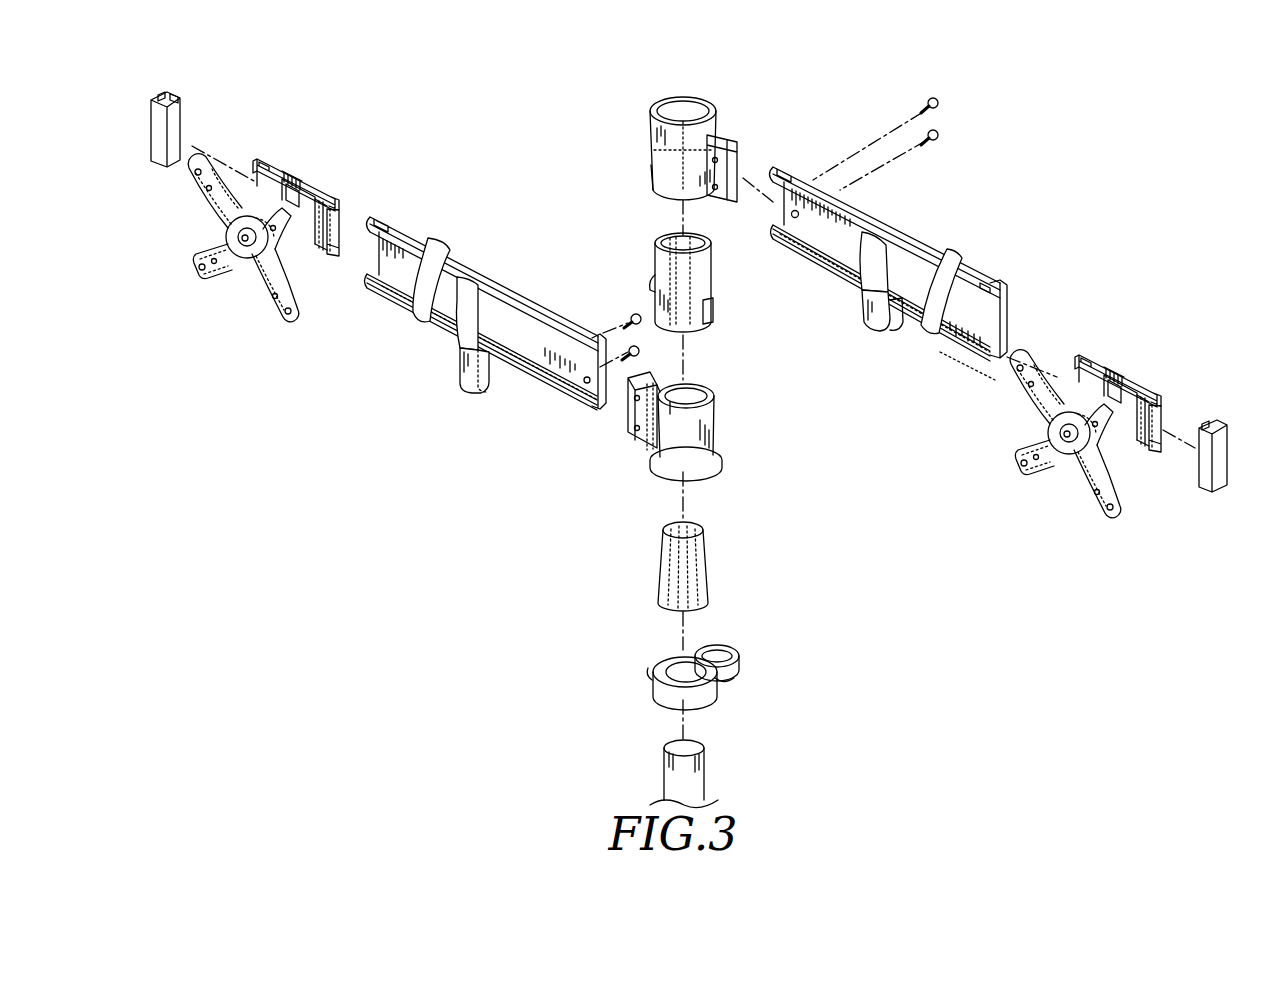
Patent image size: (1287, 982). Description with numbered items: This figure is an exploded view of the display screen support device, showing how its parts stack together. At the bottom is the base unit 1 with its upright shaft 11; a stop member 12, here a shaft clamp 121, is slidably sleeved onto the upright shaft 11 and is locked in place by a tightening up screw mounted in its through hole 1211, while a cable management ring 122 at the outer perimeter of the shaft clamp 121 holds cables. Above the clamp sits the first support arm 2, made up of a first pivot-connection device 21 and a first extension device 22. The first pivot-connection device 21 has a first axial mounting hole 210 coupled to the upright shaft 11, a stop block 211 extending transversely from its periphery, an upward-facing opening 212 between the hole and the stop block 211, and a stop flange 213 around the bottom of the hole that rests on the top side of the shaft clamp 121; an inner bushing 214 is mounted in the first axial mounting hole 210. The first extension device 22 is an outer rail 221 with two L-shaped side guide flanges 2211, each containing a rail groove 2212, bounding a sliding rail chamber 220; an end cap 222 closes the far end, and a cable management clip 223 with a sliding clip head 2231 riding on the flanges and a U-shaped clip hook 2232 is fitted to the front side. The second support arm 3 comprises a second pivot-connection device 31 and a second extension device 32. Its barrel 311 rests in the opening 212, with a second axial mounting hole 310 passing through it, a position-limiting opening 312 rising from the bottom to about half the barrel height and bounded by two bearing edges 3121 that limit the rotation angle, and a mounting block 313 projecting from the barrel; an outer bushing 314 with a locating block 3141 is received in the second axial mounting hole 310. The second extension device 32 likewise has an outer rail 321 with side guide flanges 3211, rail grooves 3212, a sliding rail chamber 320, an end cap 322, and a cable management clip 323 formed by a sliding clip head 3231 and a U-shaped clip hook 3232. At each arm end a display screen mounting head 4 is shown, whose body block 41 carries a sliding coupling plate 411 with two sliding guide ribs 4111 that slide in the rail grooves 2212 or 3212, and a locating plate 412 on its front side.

The base unit 1 is at (770, 768).
The upright shaft 11 is at (693, 783).
The stop member 12 is at (642, 670).
The shaft clamp 121 is at (680, 688).
The through hole 1211 is at (717, 680).
The cable management ring 122 is at (713, 643).
The first support arm 2 is at (488, 205).
The first pivot-connection device 21 is at (697, 440).
The first axial mounting hole 210 is at (690, 402).
The stop block 211 is at (640, 413).
The opening 212 is at (647, 436).
The stop flange 213 is at (662, 474).
The inner bushing 214 is at (670, 567).
The first extension device 22 is at (476, 278).
The sliding rail chamber 220 is at (402, 270).
The outer rail 221 is at (518, 333).
The side guide flange 2211 is at (395, 298).
The rail groove 2212 is at (405, 300).
The end cap 222 is at (165, 128).
The cable management clip 223 is at (470, 372).
The sliding clip head 2231 is at (470, 325).
The U-shaped clip hook 2232 is at (500, 370).
The second support arm 3 is at (937, 162).
The second pivot-connection device 31 is at (658, 193).
The second axial mounting hole 310 is at (690, 118).
The barrel 311 is at (673, 155).
The position-limiting opening 312 is at (650, 152).
The bearing edge 3121 is at (653, 168).
The mounting block 313 is at (720, 162).
The outer bushing 314 is at (703, 288).
The locating block 3141 is at (713, 308).
The second extension device 32 is at (873, 220).
The sliding rail chamber 320 is at (982, 312).
The outer rail 321 is at (910, 267).
The side guide flange 3211 is at (983, 350).
The rail groove 3212 is at (963, 338).
The end cap 322 is at (1218, 483).
The cable management clip 323 is at (873, 312).
The sliding clip head 3231 is at (873, 258).
The U-shaped clip hook 3232 is at (900, 320).
The display screen mounting head 4 is at (212, 232).
The body block 41 is at (290, 185).
The sliding coupling plate 411 is at (320, 205).
The sliding guide rib 4111 is at (270, 160).
The locating plate 412 is at (210, 268).